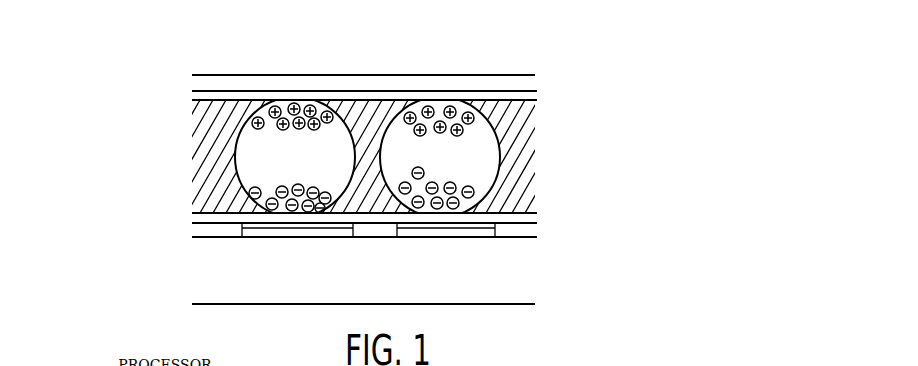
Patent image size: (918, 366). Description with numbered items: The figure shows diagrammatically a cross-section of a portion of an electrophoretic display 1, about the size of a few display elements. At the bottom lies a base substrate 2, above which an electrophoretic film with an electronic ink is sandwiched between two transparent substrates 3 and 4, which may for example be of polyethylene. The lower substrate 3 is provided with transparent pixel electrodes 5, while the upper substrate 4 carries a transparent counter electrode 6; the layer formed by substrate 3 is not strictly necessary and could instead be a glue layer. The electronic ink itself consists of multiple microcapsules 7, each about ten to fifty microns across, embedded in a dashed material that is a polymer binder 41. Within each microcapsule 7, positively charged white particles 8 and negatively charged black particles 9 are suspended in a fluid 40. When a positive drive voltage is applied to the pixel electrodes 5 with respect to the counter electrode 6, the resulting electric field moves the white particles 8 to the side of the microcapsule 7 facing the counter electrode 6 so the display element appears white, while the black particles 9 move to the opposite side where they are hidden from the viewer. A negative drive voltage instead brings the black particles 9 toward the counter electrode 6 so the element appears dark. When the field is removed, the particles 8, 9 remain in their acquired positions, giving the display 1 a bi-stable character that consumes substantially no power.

The electrophoretic display 1 is at (98, 286).
The base substrate 2 is at (487, 280).
The transparent substrate 3 is at (487, 220).
The transparent substrate 4 is at (537, 97).
The transparent pixel electrode 5 is at (290, 238).
The transparent counter electrode 6 is at (475, 88).
The microcapsule 7 is at (228, 154).
The positively charged white particles 8 is at (398, 103).
The negatively charged black particles 9 is at (250, 191).
The fluid 40 is at (295, 157).
The polymer binder 41 is at (487, 157).